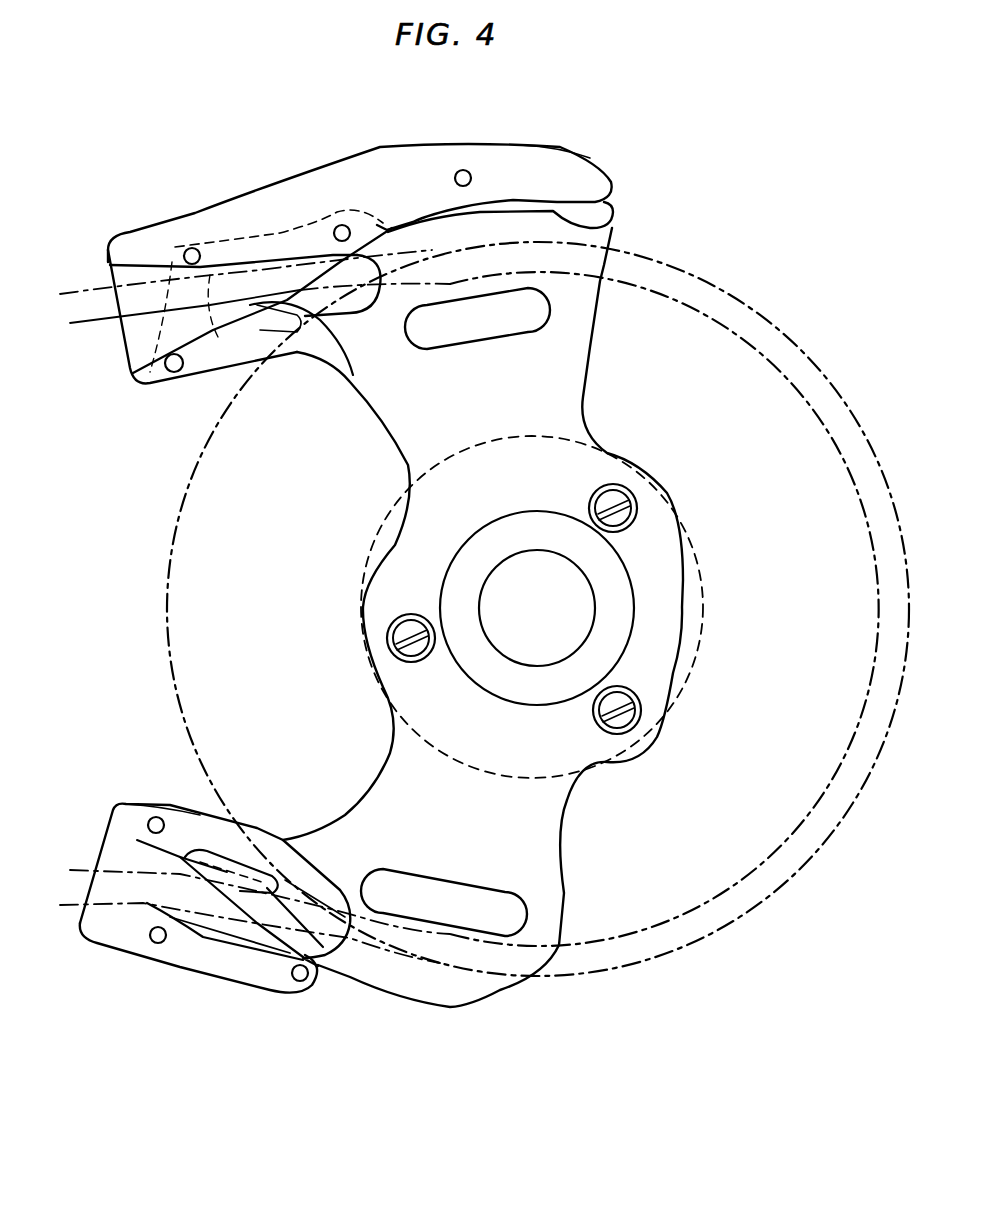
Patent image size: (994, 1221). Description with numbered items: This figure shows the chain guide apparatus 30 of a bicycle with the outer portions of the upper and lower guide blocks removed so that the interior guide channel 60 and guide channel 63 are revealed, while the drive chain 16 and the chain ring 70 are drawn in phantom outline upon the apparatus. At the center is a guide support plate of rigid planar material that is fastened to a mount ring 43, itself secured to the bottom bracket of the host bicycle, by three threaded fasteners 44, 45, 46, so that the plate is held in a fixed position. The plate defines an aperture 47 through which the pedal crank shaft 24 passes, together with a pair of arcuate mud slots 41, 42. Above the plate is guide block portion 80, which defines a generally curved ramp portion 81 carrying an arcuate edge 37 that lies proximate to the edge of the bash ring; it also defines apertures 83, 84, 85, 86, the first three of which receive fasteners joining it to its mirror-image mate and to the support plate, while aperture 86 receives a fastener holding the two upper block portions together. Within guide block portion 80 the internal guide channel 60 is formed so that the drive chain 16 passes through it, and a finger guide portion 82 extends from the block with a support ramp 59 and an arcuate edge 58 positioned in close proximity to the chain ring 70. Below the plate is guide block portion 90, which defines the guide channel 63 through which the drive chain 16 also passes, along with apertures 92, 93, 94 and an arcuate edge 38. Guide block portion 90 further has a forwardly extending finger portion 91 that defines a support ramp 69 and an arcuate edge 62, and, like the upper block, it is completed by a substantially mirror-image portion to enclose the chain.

The drive chain 16 is at (800, 352).
The pedal crank shaft 24 is at (556, 605).
The chain guide apparatus 30 is at (680, 137).
The arcuate edge 37 is at (613, 226).
The arcuate edge 38 is at (323, 947).
The arcuate mud slot 41 is at (552, 318).
The arcuate mud slot 42 is at (510, 903).
The mount ring 43 is at (695, 600).
The threaded fastener 44 is at (386, 627).
The threaded fastener 45 is at (650, 505).
The threaded fastener 46 is at (641, 700).
The aperture 47 is at (500, 527).
The arcuate edge 58 is at (300, 345).
The support ramp 59 is at (312, 318).
The guide channel 60 is at (140, 338).
The arcuate edge 62 is at (276, 867).
The guide channel 63 is at (147, 858).
The support ramp 69 is at (300, 872).
The chain ring 70 is at (176, 672).
The guide block portion 80 is at (393, 132).
The curved ramp portion 81 is at (568, 145).
The finger guide portion 82 is at (266, 345).
The aperture 83 is at (192, 248).
The aperture 84 is at (174, 373).
The aperture 85 is at (342, 225).
The aperture 86 is at (463, 170).
The guide block portion 90 is at (90, 960).
The finger portion 91 is at (267, 863).
The aperture 92 is at (160, 817).
The aperture 93 is at (158, 945).
The aperture 94 is at (300, 983).